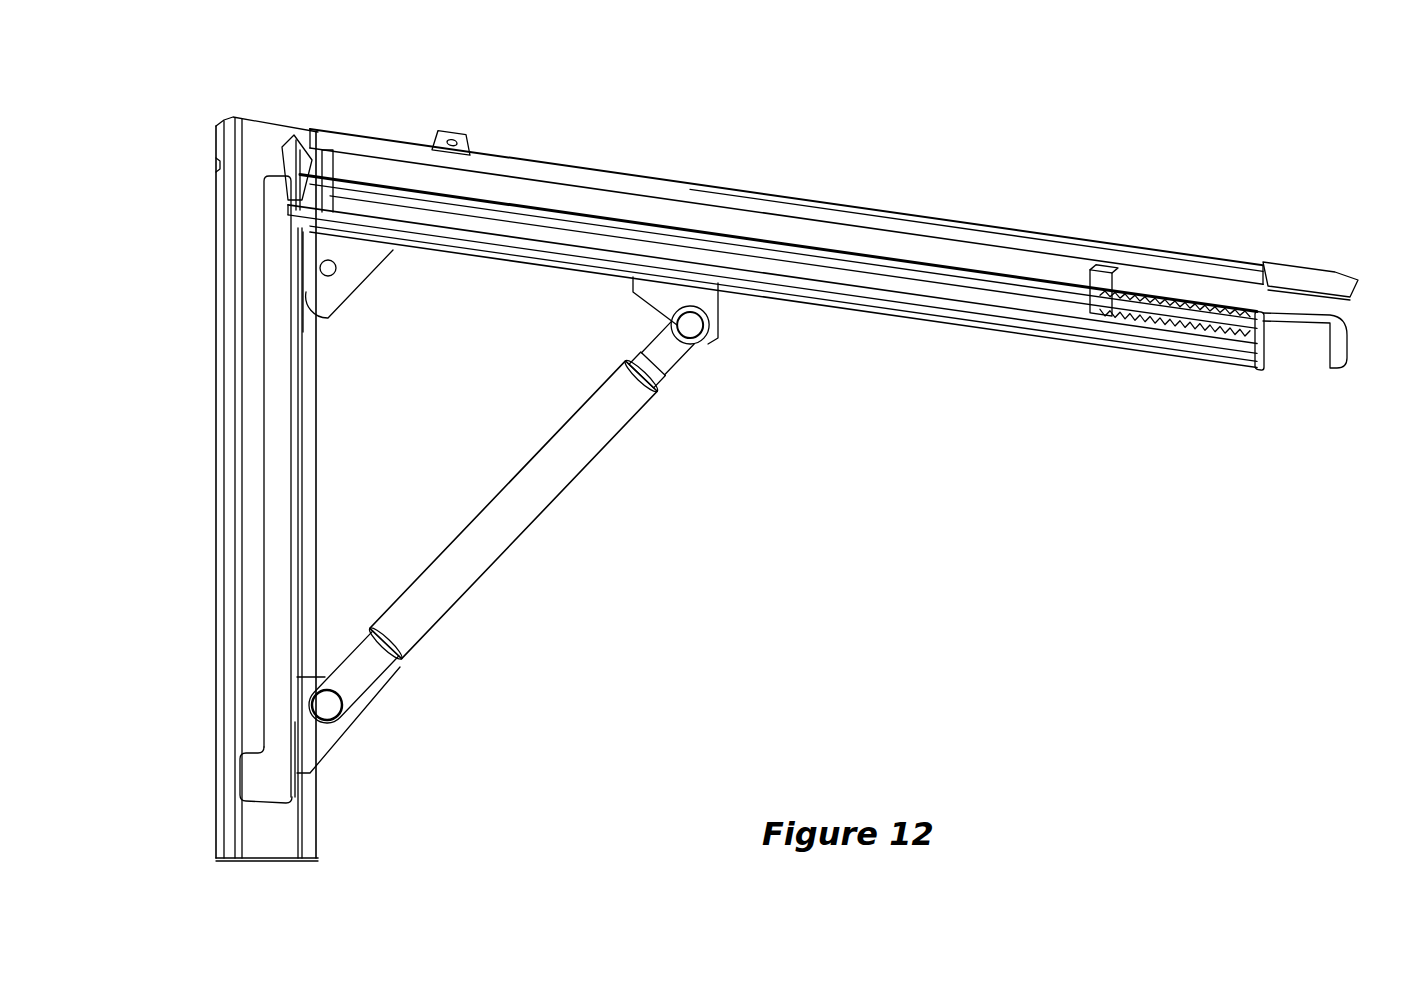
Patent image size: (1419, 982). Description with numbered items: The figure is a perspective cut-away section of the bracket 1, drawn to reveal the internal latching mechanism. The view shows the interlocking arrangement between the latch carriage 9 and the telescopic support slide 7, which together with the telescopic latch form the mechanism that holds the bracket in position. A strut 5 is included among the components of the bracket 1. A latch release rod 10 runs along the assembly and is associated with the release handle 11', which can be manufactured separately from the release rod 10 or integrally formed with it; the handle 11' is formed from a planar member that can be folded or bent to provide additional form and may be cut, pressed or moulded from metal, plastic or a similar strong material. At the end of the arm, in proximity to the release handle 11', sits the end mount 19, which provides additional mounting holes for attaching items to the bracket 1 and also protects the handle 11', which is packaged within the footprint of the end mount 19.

The bracket 1 is at (1040, 172).
The strut 5 is at (546, 533).
The telescopic support slide 7 is at (258, 449).
The latch carriage 9 is at (440, 225).
The latch release rod 10 is at (916, 278).
The end mount 19 is at (1293, 275).
The latch release handle 11' is at (1305, 379).